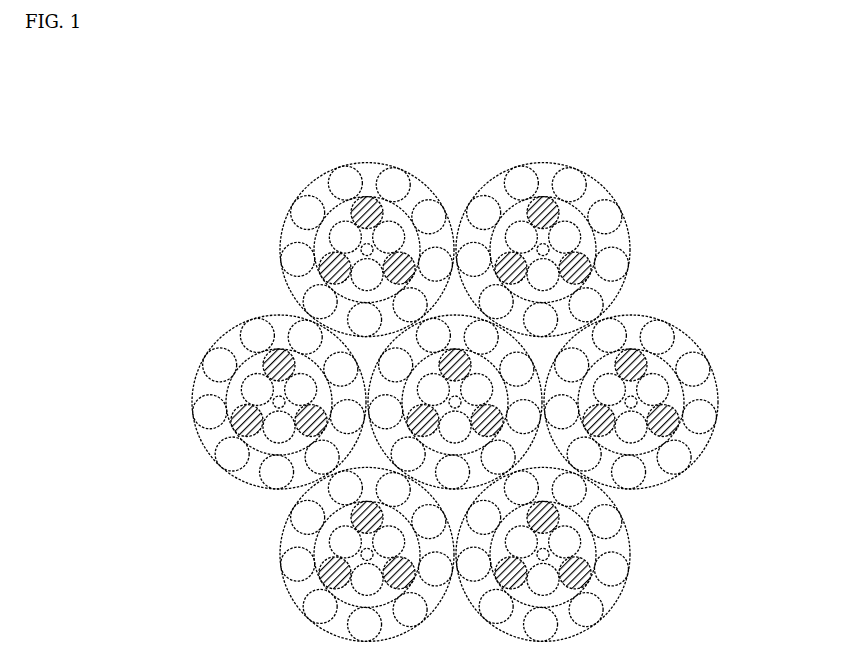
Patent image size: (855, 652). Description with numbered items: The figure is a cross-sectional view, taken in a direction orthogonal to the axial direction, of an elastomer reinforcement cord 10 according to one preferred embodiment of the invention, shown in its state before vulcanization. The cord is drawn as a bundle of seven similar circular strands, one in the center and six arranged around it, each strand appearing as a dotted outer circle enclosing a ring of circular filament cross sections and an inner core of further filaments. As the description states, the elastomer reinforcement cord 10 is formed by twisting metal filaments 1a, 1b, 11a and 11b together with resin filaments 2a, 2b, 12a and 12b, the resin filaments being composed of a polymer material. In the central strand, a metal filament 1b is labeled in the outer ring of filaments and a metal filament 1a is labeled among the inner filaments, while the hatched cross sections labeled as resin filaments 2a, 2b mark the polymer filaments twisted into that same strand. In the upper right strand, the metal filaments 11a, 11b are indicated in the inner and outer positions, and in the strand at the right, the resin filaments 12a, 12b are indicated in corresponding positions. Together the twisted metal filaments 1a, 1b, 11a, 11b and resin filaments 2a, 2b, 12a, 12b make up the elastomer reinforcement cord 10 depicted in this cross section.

The elastomer reinforcement cord 10 is at (436, 355).
The metal filament 11a is at (623, 187).
The metal filament 11b is at (613, 135).
The resin filament 12a is at (688, 331).
The resin filament 12b is at (737, 336).
The metal filament 1a is at (262, 456).
The metal filament 1b is at (307, 253).
The resin filament 2a is at (289, 521).
The resin filament 2b is at (379, 229).